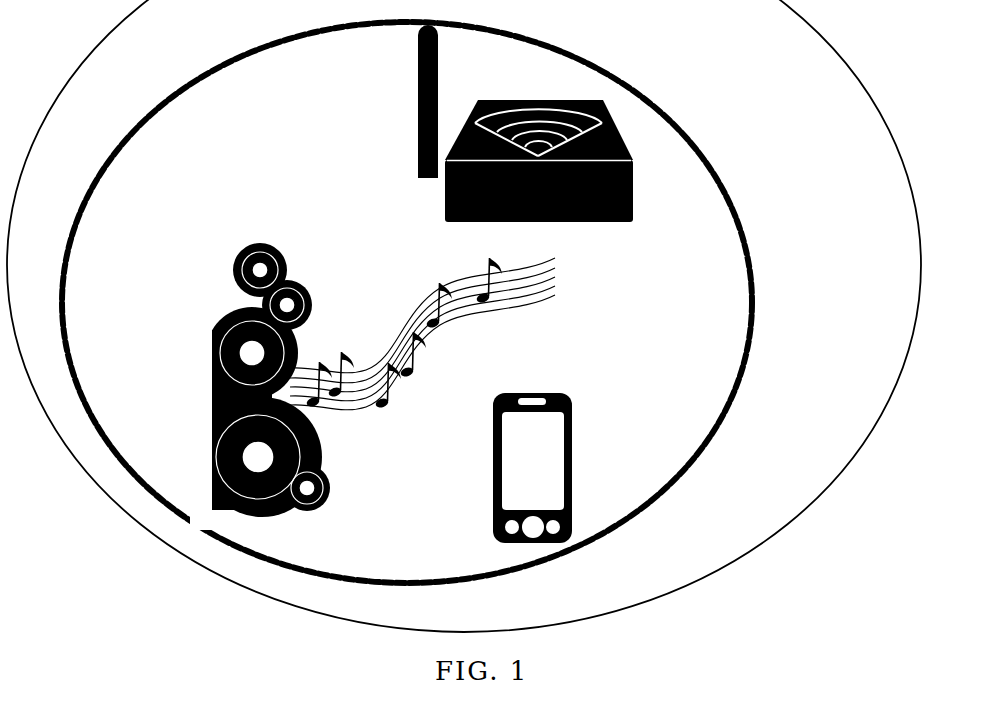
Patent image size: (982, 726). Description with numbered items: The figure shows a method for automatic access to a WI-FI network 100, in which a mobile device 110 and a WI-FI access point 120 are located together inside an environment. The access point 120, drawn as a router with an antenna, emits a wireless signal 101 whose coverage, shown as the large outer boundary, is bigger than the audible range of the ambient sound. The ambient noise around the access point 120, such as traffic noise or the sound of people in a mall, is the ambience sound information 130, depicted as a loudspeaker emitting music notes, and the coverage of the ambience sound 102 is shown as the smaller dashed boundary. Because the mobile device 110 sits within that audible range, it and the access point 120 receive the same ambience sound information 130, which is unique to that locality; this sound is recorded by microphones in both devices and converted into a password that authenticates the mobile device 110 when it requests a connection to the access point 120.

The WI-FI network 100 is at (111, 593).
The wireless signal 101 is at (709, 574).
The coverage of the ambience sound 102 is at (641, 519).
The mobile device 110 is at (578, 490).
The WI-FI access point 120 is at (633, 182).
The ambience sound information 130 is at (211, 439).